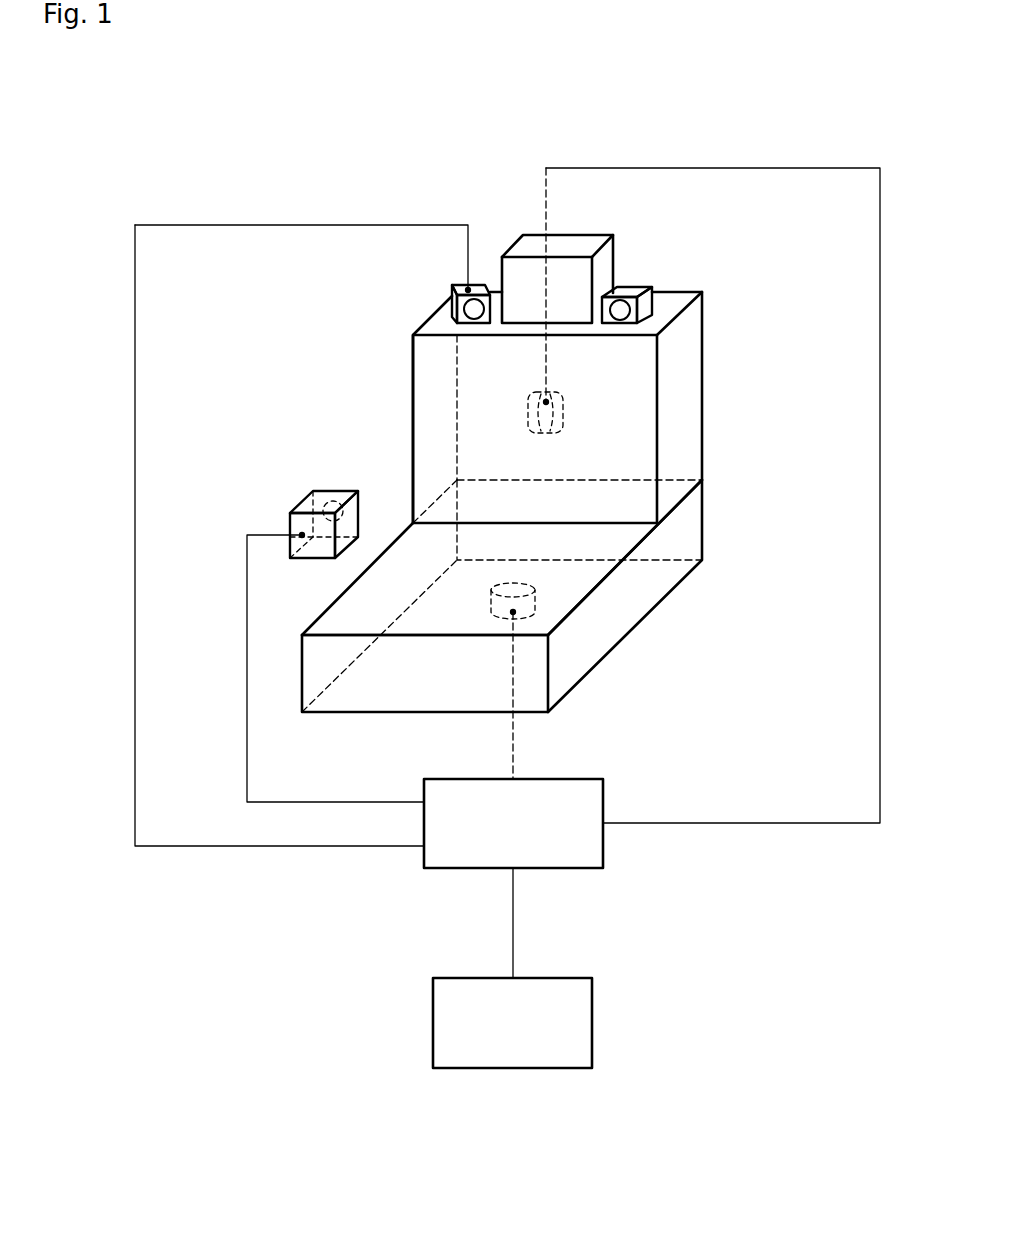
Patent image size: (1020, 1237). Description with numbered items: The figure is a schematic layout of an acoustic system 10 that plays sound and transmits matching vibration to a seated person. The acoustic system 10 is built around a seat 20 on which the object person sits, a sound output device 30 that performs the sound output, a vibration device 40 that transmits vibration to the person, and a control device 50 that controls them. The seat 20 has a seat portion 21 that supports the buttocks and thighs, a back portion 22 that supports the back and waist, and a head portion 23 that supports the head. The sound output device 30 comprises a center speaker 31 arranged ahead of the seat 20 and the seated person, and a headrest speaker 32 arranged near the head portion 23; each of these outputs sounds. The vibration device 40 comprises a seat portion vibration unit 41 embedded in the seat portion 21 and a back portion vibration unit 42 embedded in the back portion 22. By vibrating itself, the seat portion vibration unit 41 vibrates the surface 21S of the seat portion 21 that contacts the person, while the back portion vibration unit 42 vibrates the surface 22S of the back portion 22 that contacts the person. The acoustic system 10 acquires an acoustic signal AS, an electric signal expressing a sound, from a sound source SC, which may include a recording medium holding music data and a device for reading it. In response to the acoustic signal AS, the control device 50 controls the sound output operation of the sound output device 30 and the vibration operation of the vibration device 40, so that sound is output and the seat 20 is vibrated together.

The acoustic system 10 is at (221, 132).
The seat 20 is at (797, 257).
The seat portion 21 is at (678, 533).
The surface of the seat portion 21S is at (608, 573).
The back portion 22 is at (678, 357).
The surface of the back portion 22S is at (623, 423).
The head portion 23 is at (600, 268).
The sound output device 30 is at (186, 336).
The center speaker 31 is at (304, 493).
The headrest speaker 32 is at (453, 297).
The vibration device 40 is at (343, 335).
The seat portion vibration unit 41 is at (513, 585).
The back portion vibration unit 42 is at (528, 413).
The control device 50 is at (580, 779).
The acoustic signal AS is at (533, 923).
The sound source SC is at (568, 978).